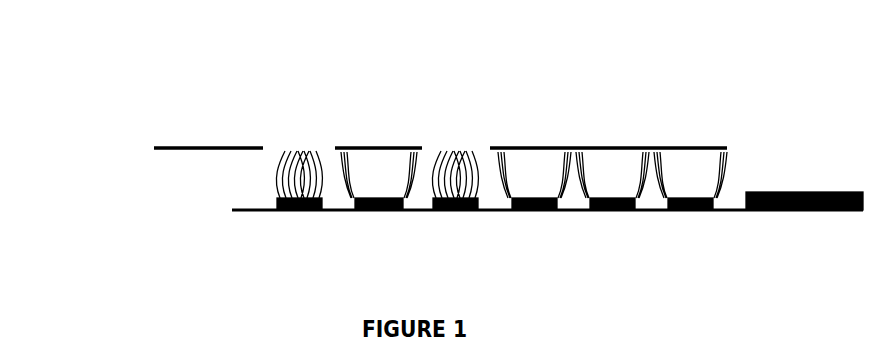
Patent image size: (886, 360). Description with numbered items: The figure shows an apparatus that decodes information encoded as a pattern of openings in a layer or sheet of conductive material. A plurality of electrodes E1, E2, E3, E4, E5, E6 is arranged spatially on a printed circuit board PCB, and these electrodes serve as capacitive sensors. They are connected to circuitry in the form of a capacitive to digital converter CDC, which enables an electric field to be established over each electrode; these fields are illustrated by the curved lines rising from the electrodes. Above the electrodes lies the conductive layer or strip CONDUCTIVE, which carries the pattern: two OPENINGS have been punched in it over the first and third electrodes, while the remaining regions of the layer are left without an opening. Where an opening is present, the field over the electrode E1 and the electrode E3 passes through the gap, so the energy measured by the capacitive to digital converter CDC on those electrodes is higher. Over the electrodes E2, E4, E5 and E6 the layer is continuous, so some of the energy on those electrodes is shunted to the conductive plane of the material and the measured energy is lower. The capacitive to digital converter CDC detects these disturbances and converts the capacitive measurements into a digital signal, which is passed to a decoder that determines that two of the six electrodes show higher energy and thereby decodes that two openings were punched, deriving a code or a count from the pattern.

The layer or sheet of conductive material CONDUCTIVE is at (374, 144).
The printed circuit board PCB is at (232, 210).
The openings OPENINGS is at (434, 122).
The capacitive to digital converter CDC is at (805, 166).
The electrode E1 is at (299, 192).
The electrode E2 is at (379, 193).
The electrode E3 is at (455, 192).
The electrode E4 is at (534, 193).
The electrode E5 is at (612, 193).
The electrode E6 is at (690, 193).